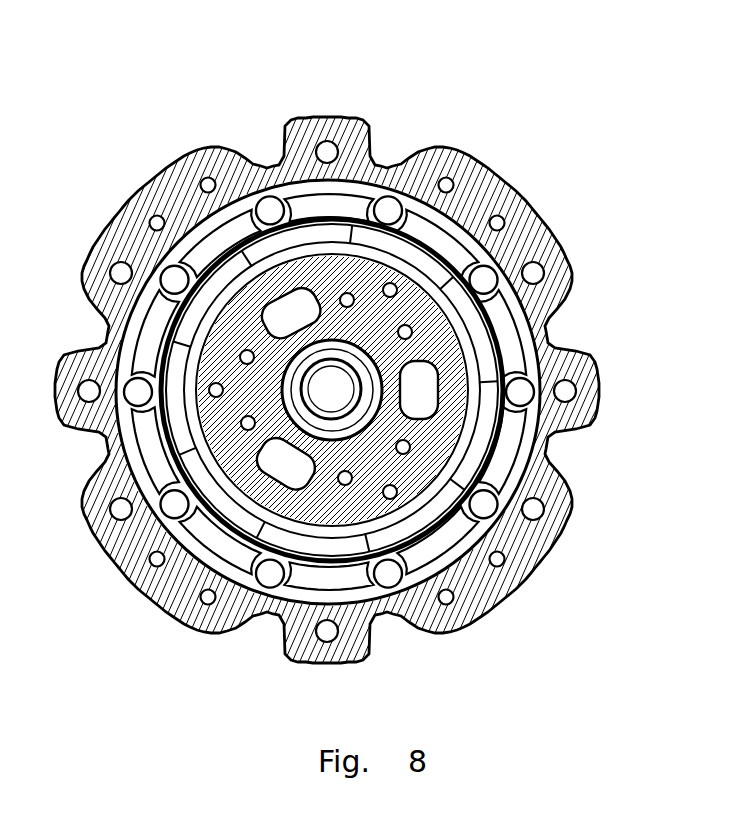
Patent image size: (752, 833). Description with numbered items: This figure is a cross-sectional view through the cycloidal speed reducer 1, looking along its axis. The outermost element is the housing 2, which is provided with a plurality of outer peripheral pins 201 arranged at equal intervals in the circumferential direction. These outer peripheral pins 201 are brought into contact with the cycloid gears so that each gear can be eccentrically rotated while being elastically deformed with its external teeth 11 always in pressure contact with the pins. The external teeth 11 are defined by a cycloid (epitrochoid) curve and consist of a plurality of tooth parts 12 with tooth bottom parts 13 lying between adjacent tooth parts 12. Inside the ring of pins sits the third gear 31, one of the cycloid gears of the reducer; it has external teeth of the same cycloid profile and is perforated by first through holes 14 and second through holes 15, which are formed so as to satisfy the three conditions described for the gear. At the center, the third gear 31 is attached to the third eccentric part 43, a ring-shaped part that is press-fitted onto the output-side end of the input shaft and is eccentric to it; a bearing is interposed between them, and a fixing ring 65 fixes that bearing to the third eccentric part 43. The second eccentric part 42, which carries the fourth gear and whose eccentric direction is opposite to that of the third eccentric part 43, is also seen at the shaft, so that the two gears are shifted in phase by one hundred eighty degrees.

The cycloidal speed reducer 1 is at (316, 86).
The housing 2 is at (603, 373).
The external teeth 11 is at (512, 117).
The tooth parts 12 is at (415, 200).
The tooth bottom parts 13 is at (358, 178).
The first through holes 14 is at (427, 250).
The second through holes 15 is at (450, 287).
The third gear 31 is at (440, 333).
The second eccentric part 42 is at (305, 410).
The third eccentric part 43 is at (356, 396).
The fixing ring 65 is at (303, 366).
The outer peripheral pins 201 is at (269, 208).